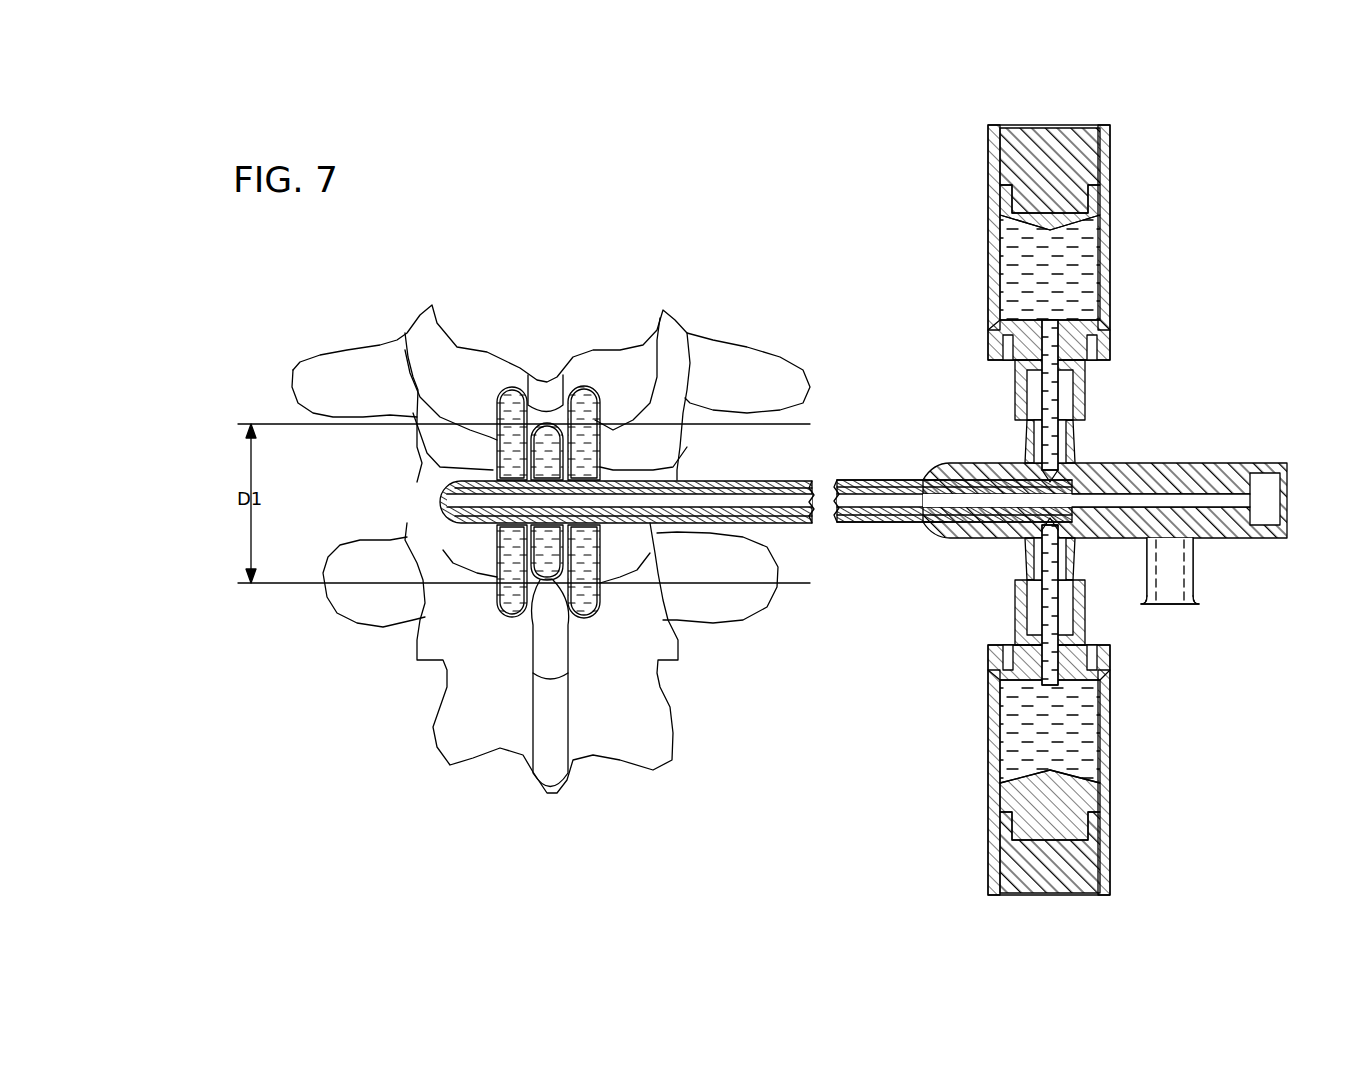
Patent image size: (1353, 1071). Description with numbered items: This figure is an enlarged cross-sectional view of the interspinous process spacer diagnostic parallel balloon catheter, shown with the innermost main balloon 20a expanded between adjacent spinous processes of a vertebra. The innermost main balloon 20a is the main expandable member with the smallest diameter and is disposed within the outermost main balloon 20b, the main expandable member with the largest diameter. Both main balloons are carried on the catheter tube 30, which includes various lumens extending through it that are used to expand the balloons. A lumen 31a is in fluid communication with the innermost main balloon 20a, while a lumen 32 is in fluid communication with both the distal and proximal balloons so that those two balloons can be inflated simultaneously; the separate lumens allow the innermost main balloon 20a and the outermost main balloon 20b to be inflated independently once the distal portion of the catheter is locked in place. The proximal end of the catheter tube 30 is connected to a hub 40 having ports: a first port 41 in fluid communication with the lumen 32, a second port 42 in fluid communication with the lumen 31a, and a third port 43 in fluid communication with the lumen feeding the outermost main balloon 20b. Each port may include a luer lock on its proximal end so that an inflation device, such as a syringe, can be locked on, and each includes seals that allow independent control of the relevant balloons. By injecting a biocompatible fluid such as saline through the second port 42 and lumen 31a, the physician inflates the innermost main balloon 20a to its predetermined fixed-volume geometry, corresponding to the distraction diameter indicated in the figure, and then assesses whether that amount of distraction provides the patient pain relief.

The innermost main balloon 20a is at (549, 582).
The outermost main balloon 20b is at (547, 582).
The catheter tube 30 is at (860, 480).
The lumen 31a is at (872, 523).
The lumen 32 is at (775, 481).
The hub 40 is at (1180, 463).
The first port 41 is at (1025, 445).
The second port 42 is at (1025, 560).
The third port 43 is at (1172, 568).